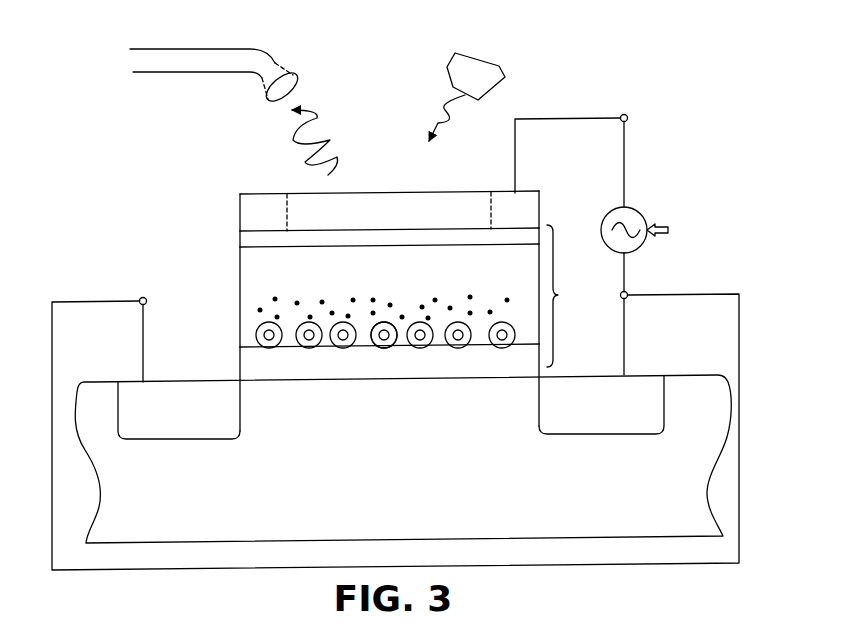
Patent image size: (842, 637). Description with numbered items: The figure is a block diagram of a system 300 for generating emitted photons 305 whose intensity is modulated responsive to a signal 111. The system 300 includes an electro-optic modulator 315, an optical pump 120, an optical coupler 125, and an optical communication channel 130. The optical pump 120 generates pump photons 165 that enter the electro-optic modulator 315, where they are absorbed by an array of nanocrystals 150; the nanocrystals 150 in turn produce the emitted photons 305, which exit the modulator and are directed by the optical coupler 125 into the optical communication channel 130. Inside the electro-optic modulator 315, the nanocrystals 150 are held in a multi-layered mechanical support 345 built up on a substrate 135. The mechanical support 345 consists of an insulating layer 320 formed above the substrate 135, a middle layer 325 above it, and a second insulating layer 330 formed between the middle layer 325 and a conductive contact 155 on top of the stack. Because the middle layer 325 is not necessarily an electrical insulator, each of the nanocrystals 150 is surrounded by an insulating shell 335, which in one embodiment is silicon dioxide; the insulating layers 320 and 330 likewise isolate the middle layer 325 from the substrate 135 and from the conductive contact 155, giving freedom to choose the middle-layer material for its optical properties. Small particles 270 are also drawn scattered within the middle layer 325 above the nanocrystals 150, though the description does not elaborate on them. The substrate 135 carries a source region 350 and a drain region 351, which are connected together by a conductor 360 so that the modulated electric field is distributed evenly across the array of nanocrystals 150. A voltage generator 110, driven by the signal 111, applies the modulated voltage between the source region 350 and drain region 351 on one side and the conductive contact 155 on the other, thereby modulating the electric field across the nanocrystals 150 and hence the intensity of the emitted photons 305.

The voltage generator 110 is at (642, 250).
The signal 111 is at (667, 222).
The optical pump 120 is at (488, 72).
The optical coupler 125 is at (300, 77).
The optical communication channel 130 is at (183, 49).
The substrate 135 is at (654, 521).
The nanocrystals 150 is at (397, 347).
The conductive contact 155 is at (245, 212).
The pump photons 165 is at (440, 118).
The implanted ions / dopants 270 is at (380, 297).
The system 300 is at (677, 30).
The emitted photons 305 is at (332, 115).
The electro-optic modulator 315 is at (71, 218).
The insulating layer 320 is at (240, 363).
The middle layer 325 is at (240, 293).
The insulating layer 330 is at (240, 237).
The insulating shells 335 is at (328, 347).
The mechanical support 345 is at (569, 296).
The source region 350 is at (592, 434).
The drain region 351 is at (180, 440).
The conductor 360 is at (739, 347).